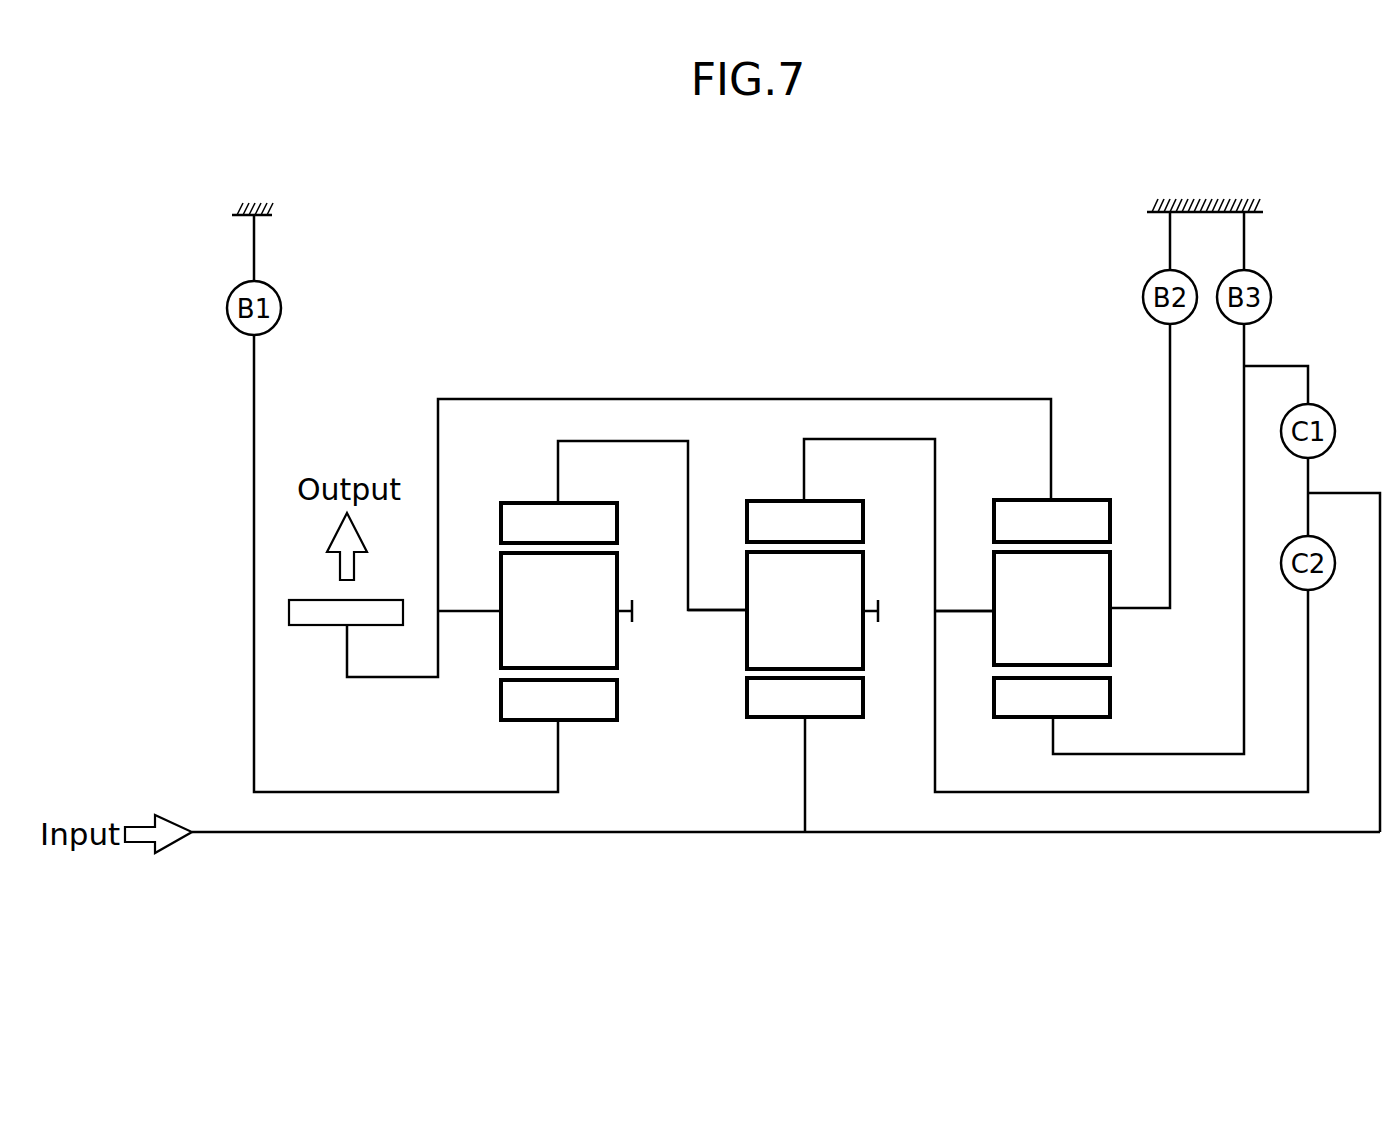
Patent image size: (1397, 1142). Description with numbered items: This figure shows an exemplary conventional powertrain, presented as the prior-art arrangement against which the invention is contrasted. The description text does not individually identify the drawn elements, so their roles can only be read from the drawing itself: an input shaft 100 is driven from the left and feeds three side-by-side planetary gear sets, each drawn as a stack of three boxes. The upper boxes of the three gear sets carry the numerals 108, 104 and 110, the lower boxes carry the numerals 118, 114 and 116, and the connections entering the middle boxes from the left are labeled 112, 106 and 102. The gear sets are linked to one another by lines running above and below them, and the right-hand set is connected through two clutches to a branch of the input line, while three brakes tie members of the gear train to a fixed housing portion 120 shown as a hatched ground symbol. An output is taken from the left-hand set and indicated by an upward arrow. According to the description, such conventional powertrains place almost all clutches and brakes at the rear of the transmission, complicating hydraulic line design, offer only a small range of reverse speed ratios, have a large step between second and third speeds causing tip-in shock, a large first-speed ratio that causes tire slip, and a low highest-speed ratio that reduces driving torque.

The input shaft 100 is at (786, 879).
The first planet carrier 102 is at (964, 656).
The second ring gear 104 is at (800, 484).
The second planet carrier 106 is at (712, 657).
The third ring gear 108 is at (541, 480).
The first ring gear 110 is at (1066, 479).
The third planet carrier 112 is at (469, 658).
The second sun gear 114 is at (818, 745).
The first sun gear 116 is at (1106, 702).
The third sun gear 118 is at (600, 731).
The transmission housing 120 is at (1216, 168).